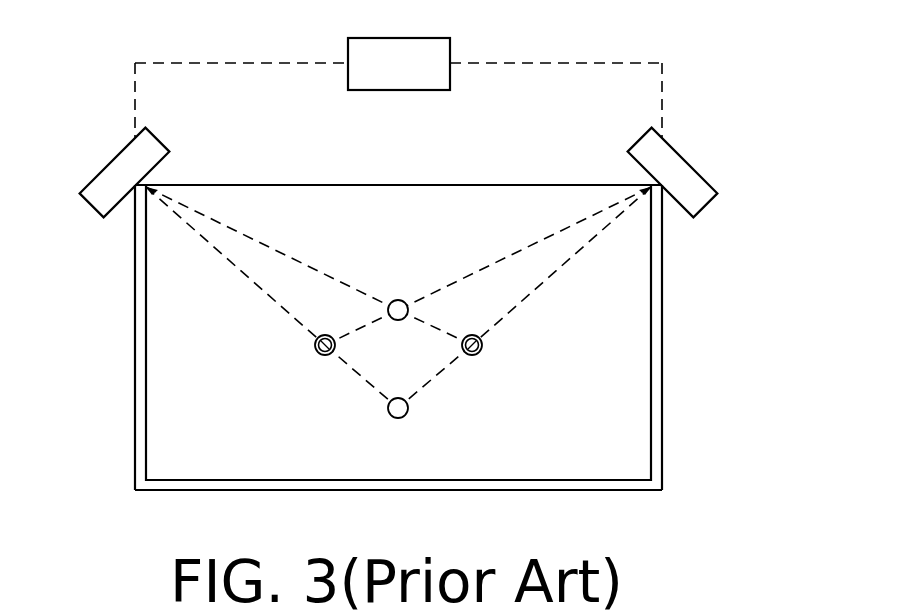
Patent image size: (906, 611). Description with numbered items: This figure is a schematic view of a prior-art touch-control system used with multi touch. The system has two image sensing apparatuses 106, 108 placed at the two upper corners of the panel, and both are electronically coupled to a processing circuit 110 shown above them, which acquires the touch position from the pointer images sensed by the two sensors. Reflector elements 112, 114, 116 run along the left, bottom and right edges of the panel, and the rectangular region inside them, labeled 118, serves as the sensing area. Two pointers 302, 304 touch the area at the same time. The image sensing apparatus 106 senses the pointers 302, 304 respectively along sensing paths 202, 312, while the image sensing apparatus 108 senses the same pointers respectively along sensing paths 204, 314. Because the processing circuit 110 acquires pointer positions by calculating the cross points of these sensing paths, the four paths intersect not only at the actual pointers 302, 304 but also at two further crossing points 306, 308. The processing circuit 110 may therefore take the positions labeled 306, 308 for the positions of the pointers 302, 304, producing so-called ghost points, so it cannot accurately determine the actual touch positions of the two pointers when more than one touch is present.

The image sensing apparatus 106 is at (90, 204).
The image sensing apparatus 108 is at (707, 206).
The processing circuit 110 is at (397, 38).
The reflector element 112 is at (140, 333).
The reflector element 114 is at (173, 483).
The reflector element 116 is at (657, 367).
The display panel 118 is at (155, 424).
The sensing path 202 is at (268, 244).
The sensing path 204 is at (531, 243).
The pointer 302 is at (397, 300).
The pointer 304 is at (398, 418).
The ghost point 306 is at (323, 355).
The ghost point 308 is at (482, 345).
The sensing path 312 is at (243, 278).
The sensing path 314 is at (538, 290).